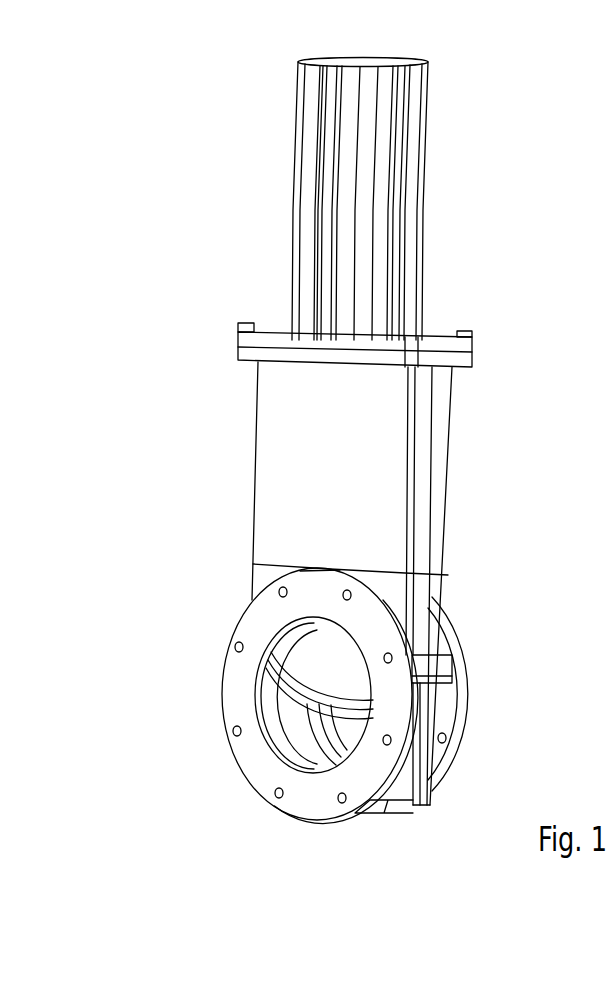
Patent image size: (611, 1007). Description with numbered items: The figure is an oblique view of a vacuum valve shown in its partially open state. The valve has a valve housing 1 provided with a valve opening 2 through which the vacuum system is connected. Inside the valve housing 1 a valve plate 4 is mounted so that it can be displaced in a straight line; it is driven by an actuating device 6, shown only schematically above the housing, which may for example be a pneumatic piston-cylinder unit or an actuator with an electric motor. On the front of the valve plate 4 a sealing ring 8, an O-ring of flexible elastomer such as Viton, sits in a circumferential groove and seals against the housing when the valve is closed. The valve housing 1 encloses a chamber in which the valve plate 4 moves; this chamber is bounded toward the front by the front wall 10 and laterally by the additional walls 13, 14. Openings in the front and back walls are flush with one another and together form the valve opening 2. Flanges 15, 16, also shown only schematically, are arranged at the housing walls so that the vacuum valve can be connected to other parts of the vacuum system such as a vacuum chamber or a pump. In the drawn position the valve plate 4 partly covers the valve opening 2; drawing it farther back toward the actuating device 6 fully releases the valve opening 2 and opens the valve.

The valve housing 1 is at (458, 448).
The valve opening 2 is at (348, 742).
The valve plate 4 is at (317, 648).
The actuating device 6 is at (434, 212).
The sealing ring 8 is at (308, 702).
The front wall 10 is at (265, 575).
The lateral wall 13 is at (442, 523).
The lateral wall 14 is at (255, 440).
The flange 15 is at (238, 687).
The flange 16 is at (466, 673).